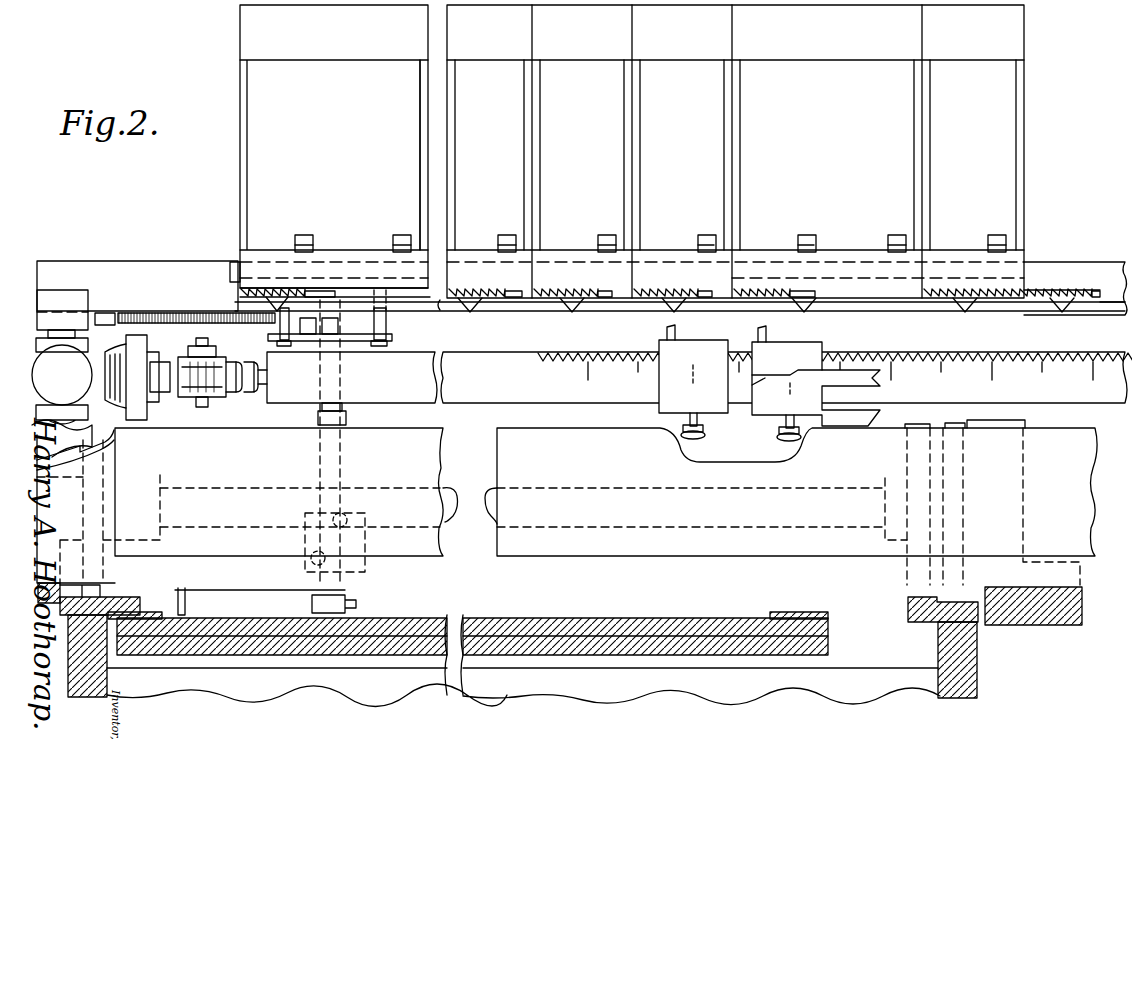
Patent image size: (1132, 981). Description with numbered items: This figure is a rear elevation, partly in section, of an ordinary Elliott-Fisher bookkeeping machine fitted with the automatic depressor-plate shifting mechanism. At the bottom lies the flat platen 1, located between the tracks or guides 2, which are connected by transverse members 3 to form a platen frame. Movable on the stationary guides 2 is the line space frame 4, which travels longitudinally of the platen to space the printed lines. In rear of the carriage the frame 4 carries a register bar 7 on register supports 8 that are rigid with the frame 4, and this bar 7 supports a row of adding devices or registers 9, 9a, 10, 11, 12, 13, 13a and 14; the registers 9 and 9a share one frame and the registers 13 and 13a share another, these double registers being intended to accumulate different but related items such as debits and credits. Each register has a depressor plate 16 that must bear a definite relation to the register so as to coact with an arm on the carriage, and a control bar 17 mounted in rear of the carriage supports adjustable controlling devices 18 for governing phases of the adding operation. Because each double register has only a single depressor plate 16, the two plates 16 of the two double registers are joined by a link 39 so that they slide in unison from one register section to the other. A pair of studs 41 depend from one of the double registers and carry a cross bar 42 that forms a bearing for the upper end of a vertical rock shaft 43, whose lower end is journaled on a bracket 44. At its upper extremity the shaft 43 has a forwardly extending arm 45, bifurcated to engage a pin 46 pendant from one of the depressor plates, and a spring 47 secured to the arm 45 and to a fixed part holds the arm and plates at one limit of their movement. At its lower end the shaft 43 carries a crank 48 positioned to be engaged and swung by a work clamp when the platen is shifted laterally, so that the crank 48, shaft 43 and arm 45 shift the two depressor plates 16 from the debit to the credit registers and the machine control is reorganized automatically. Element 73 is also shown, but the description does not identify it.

The flat platen 1 is at (556, 628).
The tracks or guides 2 is at (140, 600).
The transverse members 3 is at (860, 676).
The line space frame 4 is at (1052, 470).
The register bar 7 is at (92, 268).
The register supports 8 is at (45, 365).
The register 9 is at (258, 183).
The register 9a is at (412, 152).
The register 10 is at (735, 158).
The register 11 is at (583, 158).
The register 12 is at (683, 158).
The register 13 is at (828, 158).
The register 13a is at (881, 185).
The register 14 is at (773, 186).
The depressor plate 16 is at (240, 297).
The control bar 17 is at (508, 348).
The adjustable controlling devices 18 is at (662, 344).
The link 39 is at (548, 306).
The studs 41 is at (388, 320).
The cross bar 42 is at (361, 340).
The vertical rock shaft 43 is at (352, 388).
The bracket 44 is at (366, 556).
The forwardly extending arm 45 is at (316, 328).
The pin 46 is at (278, 330).
The spring 47 is at (168, 318).
The crank 48 is at (196, 588).
The gear 73 is at (130, 338).